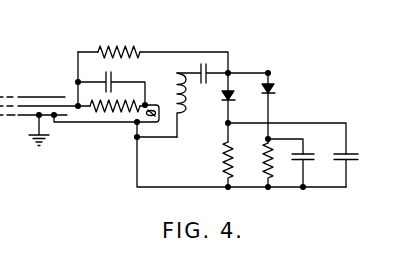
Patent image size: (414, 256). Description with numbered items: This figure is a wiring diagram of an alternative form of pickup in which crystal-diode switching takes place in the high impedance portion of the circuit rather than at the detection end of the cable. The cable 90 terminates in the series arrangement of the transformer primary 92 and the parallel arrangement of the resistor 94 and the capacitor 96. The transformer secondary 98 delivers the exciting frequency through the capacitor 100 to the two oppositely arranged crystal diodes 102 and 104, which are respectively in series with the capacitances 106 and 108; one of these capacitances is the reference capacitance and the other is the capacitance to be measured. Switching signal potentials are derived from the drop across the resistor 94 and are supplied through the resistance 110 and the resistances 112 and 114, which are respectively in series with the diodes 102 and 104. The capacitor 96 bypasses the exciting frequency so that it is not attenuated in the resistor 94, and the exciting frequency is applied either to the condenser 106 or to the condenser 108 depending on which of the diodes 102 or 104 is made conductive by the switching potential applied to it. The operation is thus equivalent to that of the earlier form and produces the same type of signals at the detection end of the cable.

The cable 90 is at (40, 97).
The transformer primary 92 is at (155, 133).
The resistor 94 is at (97, 110).
The capacitor 96 is at (114, 77).
The transformer secondary 98 is at (184, 106).
The capacitor 100 is at (208, 63).
The crystal diode 102 is at (235, 90).
The crystal diode 104 is at (276, 94).
The capacitance 106 is at (350, 163).
The capacitance 108 is at (308, 163).
The resistance 110 is at (131, 48).
The resistance 112 is at (223, 157).
The resistance 114 is at (273, 164).